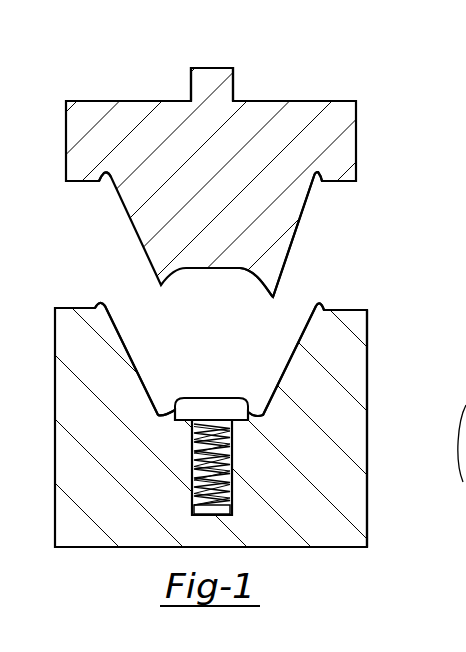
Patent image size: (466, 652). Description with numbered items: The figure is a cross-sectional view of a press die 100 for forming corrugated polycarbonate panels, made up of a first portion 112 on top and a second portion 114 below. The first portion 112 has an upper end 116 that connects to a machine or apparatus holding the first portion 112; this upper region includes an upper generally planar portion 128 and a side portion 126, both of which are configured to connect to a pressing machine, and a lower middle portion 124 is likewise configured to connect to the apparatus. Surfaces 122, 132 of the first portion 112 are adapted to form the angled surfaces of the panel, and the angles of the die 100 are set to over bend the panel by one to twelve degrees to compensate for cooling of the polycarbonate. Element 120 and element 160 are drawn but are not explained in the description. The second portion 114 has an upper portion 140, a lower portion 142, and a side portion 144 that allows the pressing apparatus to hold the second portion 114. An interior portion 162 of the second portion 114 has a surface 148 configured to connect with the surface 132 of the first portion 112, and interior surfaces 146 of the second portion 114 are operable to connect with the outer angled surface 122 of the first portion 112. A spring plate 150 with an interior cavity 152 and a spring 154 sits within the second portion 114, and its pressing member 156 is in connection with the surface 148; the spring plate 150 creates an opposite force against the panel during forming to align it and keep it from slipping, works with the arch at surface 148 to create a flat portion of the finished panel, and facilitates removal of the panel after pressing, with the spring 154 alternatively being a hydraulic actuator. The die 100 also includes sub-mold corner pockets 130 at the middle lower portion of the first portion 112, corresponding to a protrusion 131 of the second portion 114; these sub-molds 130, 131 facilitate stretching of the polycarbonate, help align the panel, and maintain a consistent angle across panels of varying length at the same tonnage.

The die 100 is at (32, 184).
The first portion 112 is at (80, 132).
The second portion 114 is at (355, 427).
The upper end 116 is at (205, 69).
The forming surface 120 is at (282, 291).
The surface 122 is at (291, 222).
The lower middle portion 124 is at (85, 181).
The side portion 126 is at (66, 181).
The upper generally planar portion 128 is at (294, 101).
The corner pocket 130 is at (322, 182).
The protrusion 131 is at (297, 353).
The surface 132 is at (211, 280).
The upper portion 140 is at (356, 309).
The lower portion 142 is at (292, 548).
The side portion 144 is at (368, 355).
The interior surfaces 146 is at (102, 302).
The surface 148 is at (170, 392).
The spring plate 150 is at (238, 450).
The interior cavity 152 is at (232, 508).
The spring 154 is at (190, 516).
The pressing member 156 is at (173, 413).
The button edge 160 is at (262, 413).
The interior portion 162 is at (196, 408).